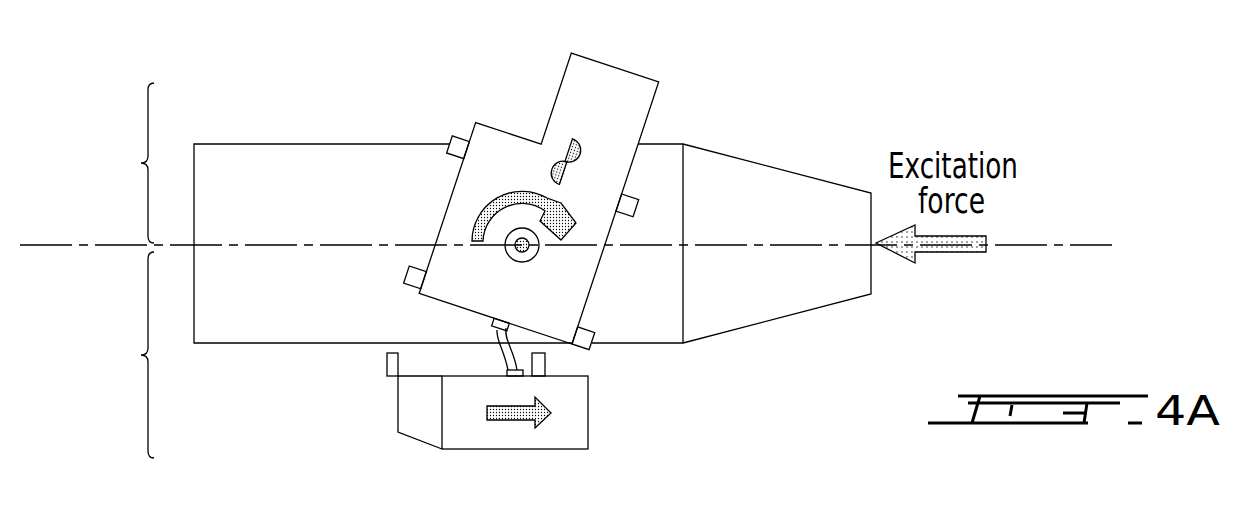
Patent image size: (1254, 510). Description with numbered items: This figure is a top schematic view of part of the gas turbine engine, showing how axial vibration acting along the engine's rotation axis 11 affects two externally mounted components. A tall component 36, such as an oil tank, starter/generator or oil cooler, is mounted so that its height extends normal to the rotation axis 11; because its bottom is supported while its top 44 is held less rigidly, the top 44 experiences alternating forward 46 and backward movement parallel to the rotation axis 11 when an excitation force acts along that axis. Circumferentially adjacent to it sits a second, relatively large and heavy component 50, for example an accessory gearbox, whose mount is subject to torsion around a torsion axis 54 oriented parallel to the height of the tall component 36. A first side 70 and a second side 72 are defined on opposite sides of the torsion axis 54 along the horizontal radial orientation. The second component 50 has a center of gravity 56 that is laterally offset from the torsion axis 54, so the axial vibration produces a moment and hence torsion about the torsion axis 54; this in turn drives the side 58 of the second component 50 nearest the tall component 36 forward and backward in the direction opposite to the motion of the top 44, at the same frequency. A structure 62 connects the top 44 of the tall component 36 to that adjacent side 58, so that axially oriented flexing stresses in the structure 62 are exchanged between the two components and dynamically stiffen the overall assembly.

The rotation axis 11 is at (1090, 245).
The tall component 36 is at (469, 369).
The top 44 is at (453, 390).
The forward movement 46 is at (518, 415).
The second component 50 is at (565, 183).
The torsion axis 54 is at (515, 231).
The center of gravity 56 is at (567, 142).
The side 58 is at (458, 280).
The structure 62 is at (497, 357).
The first side 70 is at (127, 163).
The second side 72 is at (128, 355).